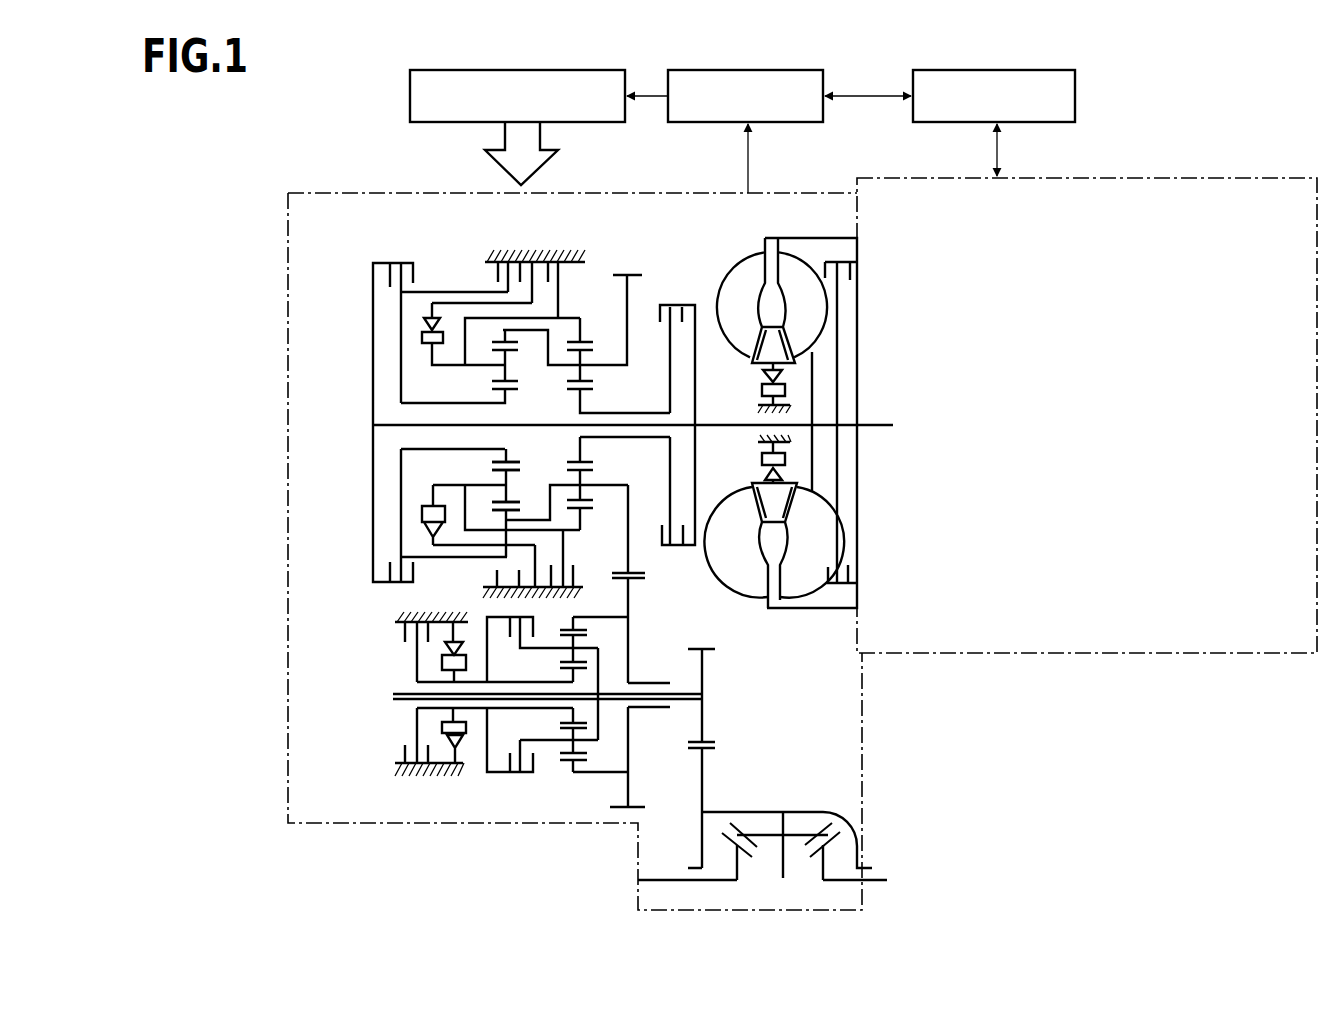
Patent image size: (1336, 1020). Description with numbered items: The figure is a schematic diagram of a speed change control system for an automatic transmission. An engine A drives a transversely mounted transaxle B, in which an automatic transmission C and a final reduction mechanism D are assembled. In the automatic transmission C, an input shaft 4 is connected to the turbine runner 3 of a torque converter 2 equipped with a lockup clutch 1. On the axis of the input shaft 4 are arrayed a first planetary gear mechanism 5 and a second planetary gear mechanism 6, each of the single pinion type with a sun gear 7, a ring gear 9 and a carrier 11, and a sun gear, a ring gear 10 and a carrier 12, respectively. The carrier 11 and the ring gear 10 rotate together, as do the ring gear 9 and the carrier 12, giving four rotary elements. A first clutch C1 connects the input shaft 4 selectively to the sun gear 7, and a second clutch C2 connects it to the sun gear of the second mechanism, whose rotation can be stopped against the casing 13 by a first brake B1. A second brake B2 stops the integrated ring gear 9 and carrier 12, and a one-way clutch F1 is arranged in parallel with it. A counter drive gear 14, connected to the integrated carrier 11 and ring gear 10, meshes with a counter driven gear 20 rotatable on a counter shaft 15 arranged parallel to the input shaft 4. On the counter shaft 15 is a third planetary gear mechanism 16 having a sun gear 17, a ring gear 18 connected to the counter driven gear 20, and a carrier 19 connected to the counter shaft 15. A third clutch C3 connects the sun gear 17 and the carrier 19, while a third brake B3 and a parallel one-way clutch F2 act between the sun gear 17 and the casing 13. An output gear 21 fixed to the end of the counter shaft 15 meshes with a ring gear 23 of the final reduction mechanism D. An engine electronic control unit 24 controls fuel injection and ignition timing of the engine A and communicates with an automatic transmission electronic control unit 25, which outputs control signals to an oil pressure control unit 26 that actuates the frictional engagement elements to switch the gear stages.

The lockup clutch 1 is at (852, 271).
The torque converter 2 is at (808, 469).
The turbine runner 3 is at (795, 577).
The input shaft 4 is at (722, 424).
The first planetary gear mechanism 5 is at (498, 308).
The second planetary gear mechanism 6 is at (487, 337).
The sun gear 7 is at (592, 389).
The ring gear 9 is at (588, 342).
The ring gear 10 is at (497, 512).
The carrier 11 is at (627, 365).
The carrier 12 is at (498, 517).
The casing 13 is at (527, 260).
The counter drive gear 14 is at (640, 577).
The counter shaft 15 is at (405, 694).
The third planetary gear mechanism 16 is at (505, 736).
The sun gear 17 is at (562, 669).
The ring gear 18 is at (581, 759).
The carrier 19 is at (592, 742).
The counter driven gear 20 is at (630, 600).
The output gear 21 is at (706, 738).
The ring gear 23 is at (712, 749).
The engine electronic control unit 24 is at (1075, 95).
The automatic transmission electronic control unit 25 is at (823, 122).
The oil pressure control unit 26 is at (410, 96).
The engine A is at (1207, 658).
The transaxle B is at (286, 386).
The automatic transmission C is at (361, 542).
The final reduction mechanism D is at (802, 802).
The first brake B1 is at (497, 266).
The second brake B2 is at (575, 267).
The third brake B3 is at (405, 755).
The first clutch C1 is at (683, 305).
The second clutch C2 is at (400, 262).
The third clutch C3 is at (515, 772).
The one-way clutch F1 is at (420, 338).
The one-way clutch F2 is at (467, 742).